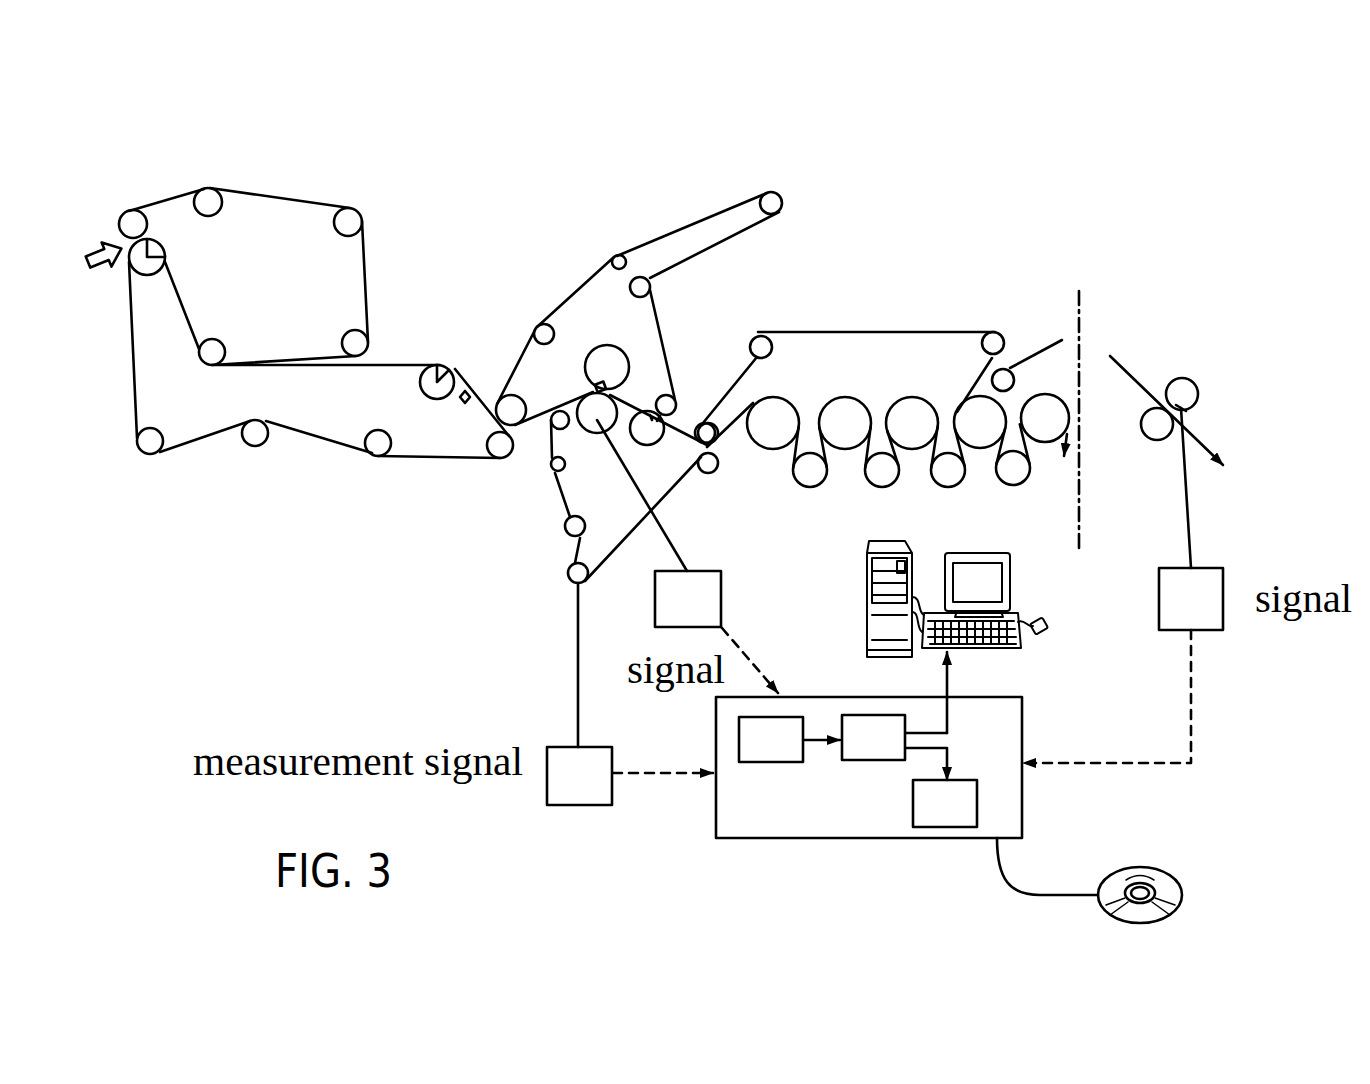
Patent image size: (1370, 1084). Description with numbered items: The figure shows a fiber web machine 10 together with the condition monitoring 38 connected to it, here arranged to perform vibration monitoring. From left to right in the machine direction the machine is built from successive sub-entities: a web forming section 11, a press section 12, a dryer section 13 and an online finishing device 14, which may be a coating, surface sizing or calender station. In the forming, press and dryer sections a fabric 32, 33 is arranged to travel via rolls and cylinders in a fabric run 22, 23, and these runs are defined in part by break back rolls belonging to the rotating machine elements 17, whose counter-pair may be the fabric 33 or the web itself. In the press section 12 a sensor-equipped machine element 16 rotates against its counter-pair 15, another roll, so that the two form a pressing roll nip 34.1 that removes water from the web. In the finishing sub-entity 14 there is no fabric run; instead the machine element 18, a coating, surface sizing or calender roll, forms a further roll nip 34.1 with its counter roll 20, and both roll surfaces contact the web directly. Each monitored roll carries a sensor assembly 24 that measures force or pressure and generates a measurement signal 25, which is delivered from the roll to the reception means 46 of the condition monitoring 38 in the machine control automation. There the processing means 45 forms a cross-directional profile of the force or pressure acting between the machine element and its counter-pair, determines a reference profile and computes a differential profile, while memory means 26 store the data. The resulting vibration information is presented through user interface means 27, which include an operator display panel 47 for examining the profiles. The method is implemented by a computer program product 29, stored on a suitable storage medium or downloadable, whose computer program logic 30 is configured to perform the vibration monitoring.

The fiber web machine 10 is at (807, 143).
The web forming section 11 is at (297, 173).
The press section 12 is at (688, 200).
The dryer section 13 is at (840, 320).
The online finishing device 14 is at (1207, 307).
The counter-pair roll 15 is at (605, 346).
The machine element 16 is at (587, 433).
The break back roll 17 is at (571, 582).
The machine element 18 is at (1170, 382).
The counter roll 20 is at (1148, 437).
The fabric run 22 is at (667, 327).
The fabric run 23 is at (560, 498).
The sensor assembly 24 is at (847, 486).
The measurement signal 25 is at (672, 617).
The memory means 26 is at (929, 821).
The user interface means 27 is at (862, 587).
The computer program product 29 is at (1198, 876).
The computer program logic 30 is at (1140, 910).
The fabric 32 is at (645, 250).
The fabric 33 is at (702, 473).
The roll nip 34.1 is at (583, 388).
The condition monitoring 38 is at (777, 858).
The processing means 45 is at (857, 756).
The reception means 46 is at (755, 758).
The operator display panel 47 is at (1018, 582).